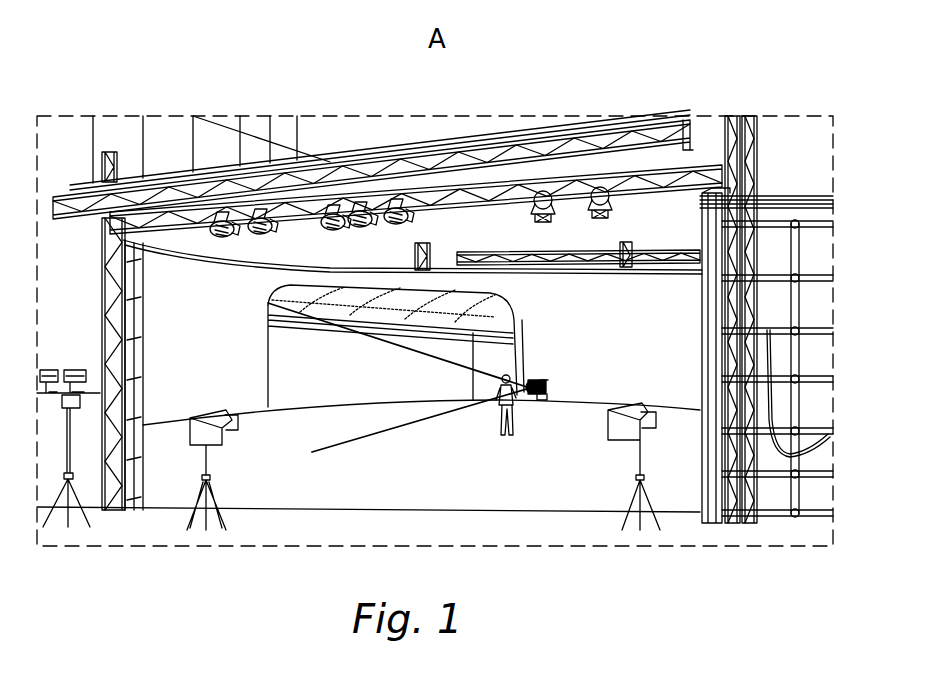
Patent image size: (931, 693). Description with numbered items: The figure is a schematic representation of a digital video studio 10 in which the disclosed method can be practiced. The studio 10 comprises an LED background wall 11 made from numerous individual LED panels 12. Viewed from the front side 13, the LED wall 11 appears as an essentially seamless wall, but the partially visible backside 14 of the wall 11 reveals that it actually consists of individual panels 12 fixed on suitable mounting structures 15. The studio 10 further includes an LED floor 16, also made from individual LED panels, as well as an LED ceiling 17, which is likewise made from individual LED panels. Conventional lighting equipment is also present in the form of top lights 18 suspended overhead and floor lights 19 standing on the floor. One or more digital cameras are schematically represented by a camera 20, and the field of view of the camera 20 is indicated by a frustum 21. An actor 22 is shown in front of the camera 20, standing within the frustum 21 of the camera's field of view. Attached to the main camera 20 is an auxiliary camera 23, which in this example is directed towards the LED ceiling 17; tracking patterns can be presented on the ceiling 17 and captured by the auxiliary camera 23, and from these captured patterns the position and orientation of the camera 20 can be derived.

The digital video studio 10 is at (540, 504).
The LED background wall 11 is at (178, 307).
The LED panels 12 is at (793, 302).
The front side 13 is at (227, 381).
The backside 14 is at (807, 409).
The mounting structures 15 is at (800, 245).
The LED floor 16 is at (305, 482).
The LED ceiling 17 is at (450, 213).
The top lights 18 is at (325, 210).
The floor lights 19 is at (200, 438).
The camera 20 is at (546, 388).
The frustum 21 is at (373, 433).
The actor 22 is at (505, 408).
The auxiliary camera 23 is at (540, 380).